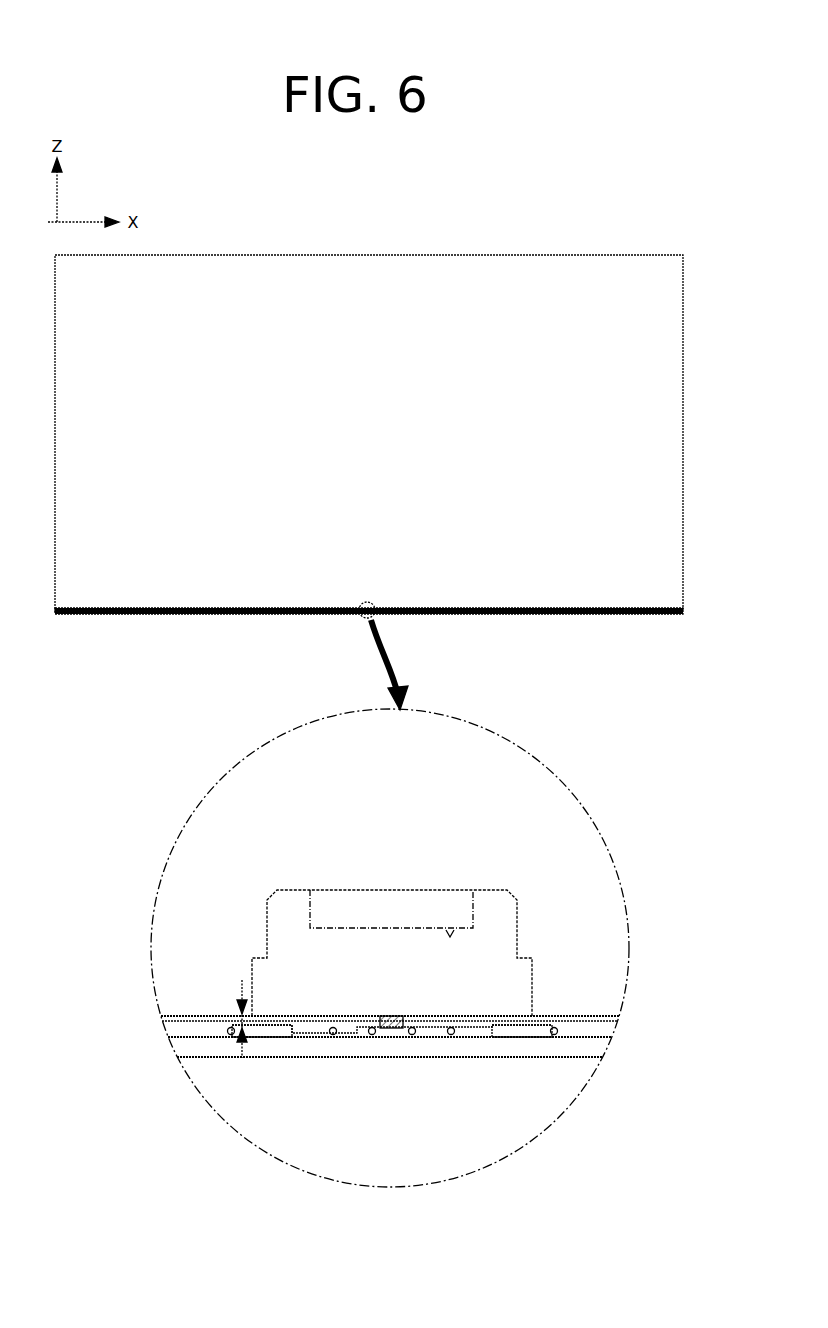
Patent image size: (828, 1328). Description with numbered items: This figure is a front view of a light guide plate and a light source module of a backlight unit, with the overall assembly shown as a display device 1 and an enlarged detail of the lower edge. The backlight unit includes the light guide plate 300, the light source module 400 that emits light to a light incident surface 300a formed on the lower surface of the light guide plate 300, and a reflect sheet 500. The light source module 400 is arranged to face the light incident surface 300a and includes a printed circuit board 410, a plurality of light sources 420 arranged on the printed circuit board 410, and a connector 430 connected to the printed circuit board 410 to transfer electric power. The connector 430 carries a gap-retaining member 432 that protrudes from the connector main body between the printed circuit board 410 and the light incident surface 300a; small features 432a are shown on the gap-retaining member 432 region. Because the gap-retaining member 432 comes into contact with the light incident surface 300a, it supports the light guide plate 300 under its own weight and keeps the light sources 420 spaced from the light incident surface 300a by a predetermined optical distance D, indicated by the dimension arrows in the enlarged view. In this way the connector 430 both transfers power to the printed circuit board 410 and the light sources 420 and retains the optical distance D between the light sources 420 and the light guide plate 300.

The display device 1 is at (368, 192).
The light guide plate 300 is at (583, 256).
The light source module 400 is at (631, 616).
The light incident surface 300a is at (593, 1015).
The reflect sheet 500 is at (607, 1021).
The printed circuit board 410 is at (587, 1047).
The light sources 420 is at (262, 1038).
The connector 430 is at (252, 972).
The gap-retaining member 432 is at (392, 1030).
The conductive balls 432a is at (388, 1017).
The predetermined optical distance D is at (240, 1010).